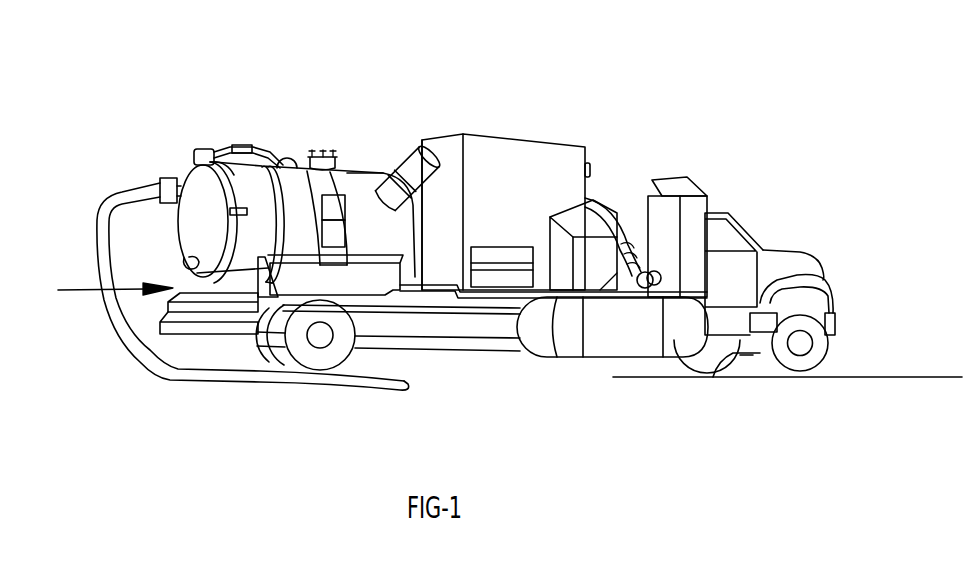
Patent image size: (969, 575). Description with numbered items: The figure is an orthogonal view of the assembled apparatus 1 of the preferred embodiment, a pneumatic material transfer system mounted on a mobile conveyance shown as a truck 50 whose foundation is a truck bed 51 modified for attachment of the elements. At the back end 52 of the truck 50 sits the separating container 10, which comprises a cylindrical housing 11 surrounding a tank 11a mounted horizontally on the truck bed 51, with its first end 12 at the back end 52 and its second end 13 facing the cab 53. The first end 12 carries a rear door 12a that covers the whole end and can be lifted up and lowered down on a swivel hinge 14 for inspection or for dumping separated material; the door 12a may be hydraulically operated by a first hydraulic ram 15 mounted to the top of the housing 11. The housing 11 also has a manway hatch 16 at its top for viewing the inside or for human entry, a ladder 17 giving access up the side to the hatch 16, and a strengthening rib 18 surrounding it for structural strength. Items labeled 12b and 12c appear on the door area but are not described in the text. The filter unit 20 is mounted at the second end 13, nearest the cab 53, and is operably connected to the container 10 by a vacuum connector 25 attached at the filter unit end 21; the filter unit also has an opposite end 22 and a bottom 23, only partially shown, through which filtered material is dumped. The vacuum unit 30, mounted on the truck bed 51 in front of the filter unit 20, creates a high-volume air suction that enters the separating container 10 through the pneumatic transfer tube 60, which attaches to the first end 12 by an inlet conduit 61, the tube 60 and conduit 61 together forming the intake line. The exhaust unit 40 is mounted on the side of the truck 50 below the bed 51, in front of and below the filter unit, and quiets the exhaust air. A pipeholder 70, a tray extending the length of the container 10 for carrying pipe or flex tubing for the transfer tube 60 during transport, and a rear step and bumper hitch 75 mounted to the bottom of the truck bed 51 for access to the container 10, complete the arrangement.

The apparatus 1 is at (738, 128).
The separating container 10 is at (357, 170).
The cylindrical housing 11 is at (373, 172).
The tank 11a is at (347, 178).
The first end 12 is at (180, 180).
The rear door 12a is at (195, 188).
The door handle 12b is at (233, 215).
The door latch 12c is at (185, 263).
The second end 13 is at (450, 187).
The swivel hinge 14 is at (207, 148).
The first hydraulic ram 15 is at (243, 141).
The manway hatch 16 is at (315, 152).
The ladder 17 is at (325, 235).
The strengthening rib 18 is at (278, 232).
The filter unit 20 is at (532, 163).
The end 21 is at (457, 180).
The end 22 is at (588, 185).
The bottom 23 is at (492, 303).
The vacuum connector 25 is at (420, 157).
The vacuum unit 30 is at (610, 213).
The exhaust unit 40 is at (628, 343).
The truck 50 is at (768, 250).
The truck bed 51 is at (488, 352).
The back end 52 is at (103, 288).
The cab 53 is at (767, 268).
The pneumatic transfer tube 60 is at (120, 313).
The inlet conduit 61 is at (133, 190).
The pipeholder 70 is at (467, 332).
The rear step and bumper hitch 75 is at (163, 333).